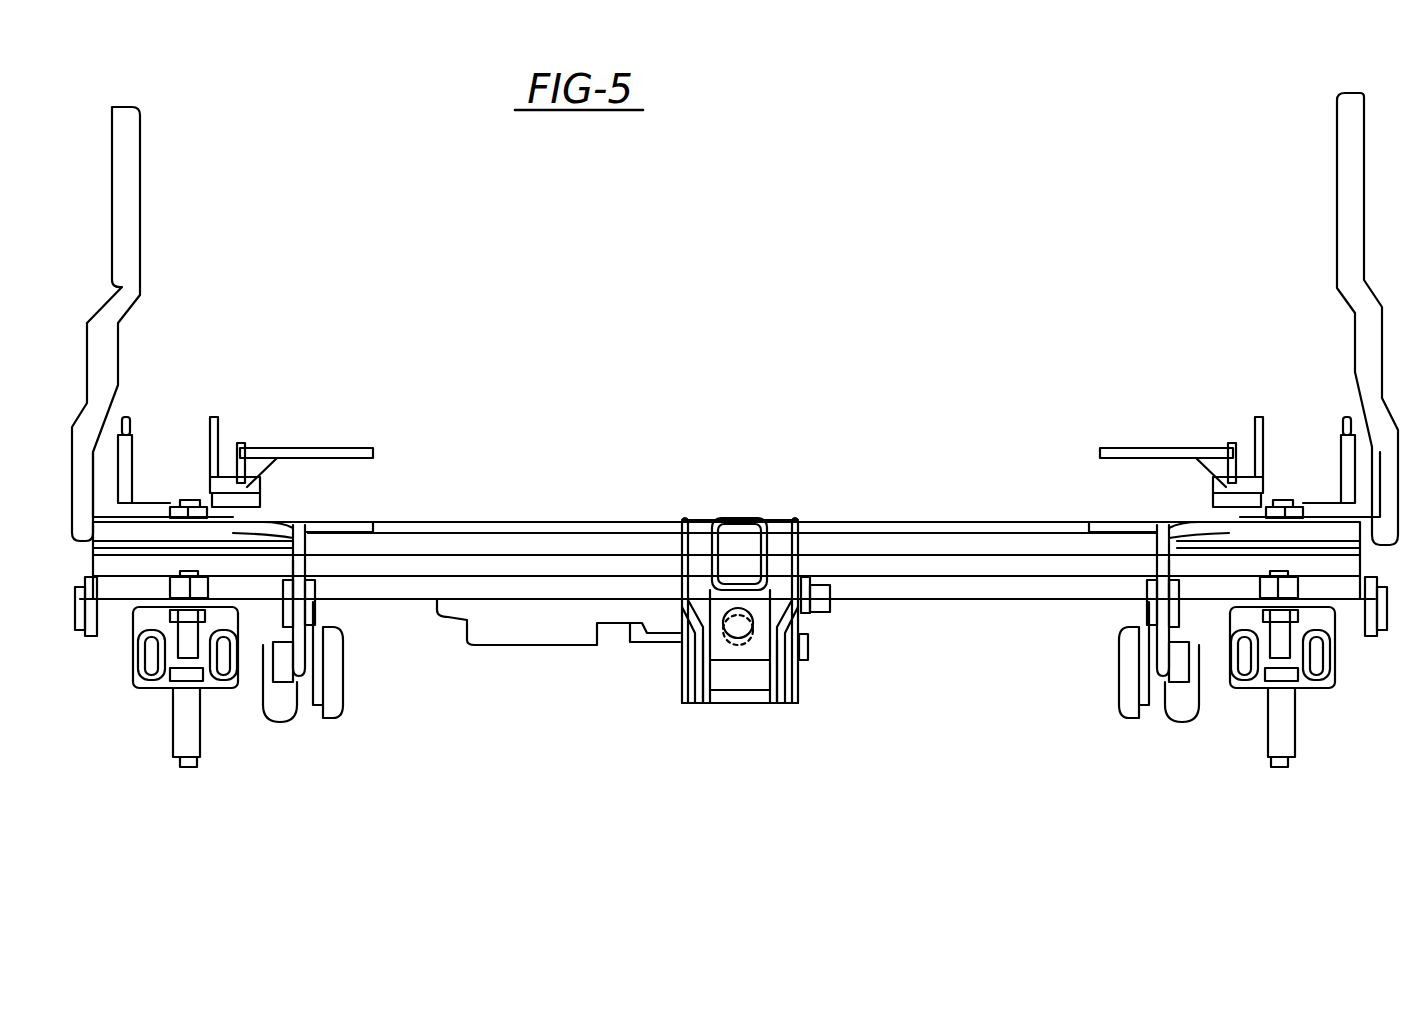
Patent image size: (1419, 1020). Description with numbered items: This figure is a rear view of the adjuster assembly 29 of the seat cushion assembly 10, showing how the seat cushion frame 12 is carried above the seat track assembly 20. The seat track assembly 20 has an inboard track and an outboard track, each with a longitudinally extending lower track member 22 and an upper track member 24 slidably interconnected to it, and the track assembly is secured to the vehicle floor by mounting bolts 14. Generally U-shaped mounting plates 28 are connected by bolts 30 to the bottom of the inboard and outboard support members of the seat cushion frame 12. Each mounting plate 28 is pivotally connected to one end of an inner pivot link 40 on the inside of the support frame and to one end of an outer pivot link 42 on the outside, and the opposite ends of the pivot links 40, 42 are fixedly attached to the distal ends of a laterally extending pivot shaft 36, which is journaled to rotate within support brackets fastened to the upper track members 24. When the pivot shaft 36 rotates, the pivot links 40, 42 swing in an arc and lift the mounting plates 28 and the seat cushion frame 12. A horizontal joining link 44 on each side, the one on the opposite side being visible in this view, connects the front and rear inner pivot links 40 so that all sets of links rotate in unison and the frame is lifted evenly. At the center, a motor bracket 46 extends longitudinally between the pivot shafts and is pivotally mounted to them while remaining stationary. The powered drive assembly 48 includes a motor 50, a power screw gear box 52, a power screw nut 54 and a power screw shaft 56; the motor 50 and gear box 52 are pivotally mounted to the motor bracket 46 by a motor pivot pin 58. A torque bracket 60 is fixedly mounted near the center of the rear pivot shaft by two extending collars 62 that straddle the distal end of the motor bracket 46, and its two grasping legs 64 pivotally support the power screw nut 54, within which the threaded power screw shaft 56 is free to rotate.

The seat cushion assembly 10 is at (549, 720).
The seat cushion frame 12 is at (146, 212).
The mounting bolts 14 is at (200, 748).
The seat track assembly 20 is at (126, 667).
The lower track member 22 is at (212, 690).
The upper track member 24 is at (142, 686).
The mounting plates 28 is at (290, 540).
The adjuster assembly 29 is at (678, 493).
The bolts 30 is at (183, 505).
The front pivot shaft 36 is at (953, 540).
The inner pivot link 40 is at (303, 572).
The outer pivot link 42 is at (95, 562).
The horizontal joining link 44 is at (340, 720).
The motor bracket 46 is at (737, 517).
The powered drive assembly 48 is at (756, 710).
The motor 50 is at (545, 628).
The power screw gear box 52 is at (772, 666).
The power screw nut 54 is at (728, 653).
The power screw shaft 56 is at (745, 625).
The motor pivot pin 58 is at (808, 653).
The torque bracket 60 is at (694, 662).
The extending collars 62 is at (798, 520).
The grasping legs 64 is at (780, 670).